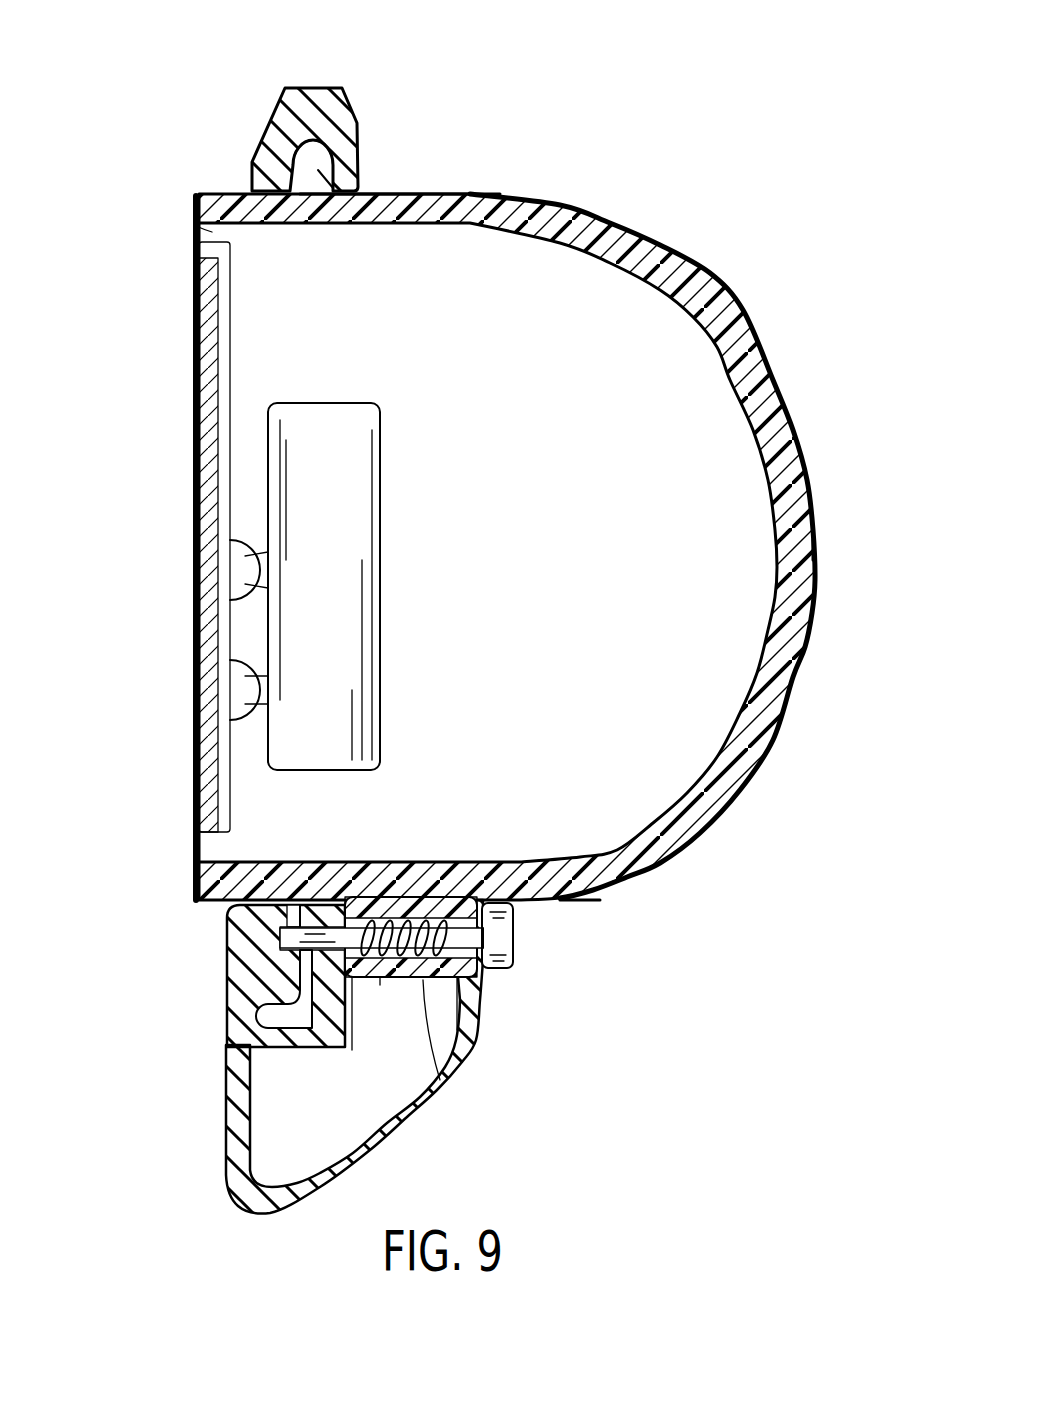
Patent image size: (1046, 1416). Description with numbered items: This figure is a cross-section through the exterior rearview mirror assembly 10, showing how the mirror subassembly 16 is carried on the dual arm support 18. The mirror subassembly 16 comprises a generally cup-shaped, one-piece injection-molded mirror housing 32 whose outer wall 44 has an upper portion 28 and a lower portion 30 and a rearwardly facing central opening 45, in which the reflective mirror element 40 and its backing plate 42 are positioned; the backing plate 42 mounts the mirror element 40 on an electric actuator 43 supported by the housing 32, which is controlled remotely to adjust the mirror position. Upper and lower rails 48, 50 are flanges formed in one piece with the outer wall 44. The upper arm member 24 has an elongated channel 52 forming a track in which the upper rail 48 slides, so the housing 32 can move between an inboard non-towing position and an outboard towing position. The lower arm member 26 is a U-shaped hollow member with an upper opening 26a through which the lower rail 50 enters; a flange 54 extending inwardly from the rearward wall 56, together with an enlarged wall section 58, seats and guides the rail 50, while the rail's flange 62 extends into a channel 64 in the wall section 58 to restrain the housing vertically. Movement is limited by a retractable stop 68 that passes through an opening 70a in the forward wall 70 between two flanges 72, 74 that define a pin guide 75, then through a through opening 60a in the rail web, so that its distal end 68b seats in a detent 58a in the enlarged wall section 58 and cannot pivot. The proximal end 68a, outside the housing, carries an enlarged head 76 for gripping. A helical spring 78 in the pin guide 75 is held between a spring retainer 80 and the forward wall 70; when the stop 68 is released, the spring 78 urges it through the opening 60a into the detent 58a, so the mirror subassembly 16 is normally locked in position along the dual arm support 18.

The exterior rearview mirror assembly 10 is at (688, 108).
The mirror subassembly 16 is at (775, 302).
The dual arm support 18 is at (358, 70).
The arm member 24 is at (340, 103).
The lower arm member 26 is at (224, 1103).
The upper opening 26a is at (312, 925).
The upper portion 28 is at (490, 194).
The lower portion 30 is at (640, 892).
The mirror housing 32 is at (818, 548).
The reflective mirror element 40 is at (195, 370).
The backing plate 42 is at (232, 330).
The electric actuator 43 is at (363, 480).
The outer wall 44 is at (675, 292).
The central opening 45 is at (207, 231).
The upper rail 48 is at (303, 153).
The lower rail 50 is at (352, 1048).
The channel 52 is at (320, 178).
The flange 54 is at (270, 1053).
The rearward wall 56 is at (240, 1132).
The enlarged wall section 58 is at (253, 912).
The detent 58a is at (283, 928).
The through opening 60a is at (307, 1053).
The flange 62 is at (257, 1015).
The channel 64 is at (262, 994).
The stop 68 is at (338, 940).
The proximal end 68a is at (487, 905).
The distal end 68b is at (282, 965).
The forward wall 70 is at (440, 1122).
The opening 70a is at (482, 977).
The flange 72 is at (372, 918).
The flange 74 is at (380, 980).
The pin guide 75 is at (452, 900).
The enlarged head 76 is at (502, 925).
The helical spring 78 is at (473, 1047).
The spring retainer 80 is at (366, 984).